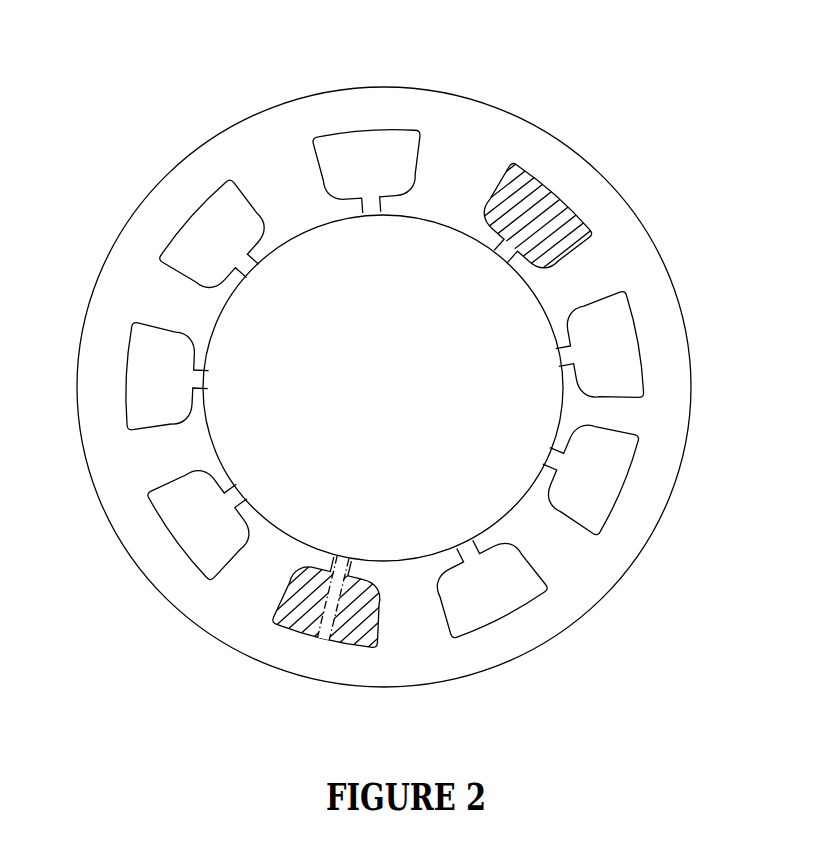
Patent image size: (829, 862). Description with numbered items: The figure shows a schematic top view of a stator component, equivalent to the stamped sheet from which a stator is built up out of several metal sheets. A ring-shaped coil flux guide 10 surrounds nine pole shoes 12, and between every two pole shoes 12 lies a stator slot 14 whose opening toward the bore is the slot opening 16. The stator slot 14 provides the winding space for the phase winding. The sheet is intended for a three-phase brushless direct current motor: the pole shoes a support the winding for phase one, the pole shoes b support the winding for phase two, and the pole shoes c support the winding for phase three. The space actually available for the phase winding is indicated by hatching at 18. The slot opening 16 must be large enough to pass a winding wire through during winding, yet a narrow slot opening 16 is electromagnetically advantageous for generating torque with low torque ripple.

The coil flux guide 10 is at (668, 502).
The pole shoe 12 is at (371, 352).
The stator slot 14 is at (535, 209).
The slot opening 16 is at (565, 356).
The space available for the phase winding 18 is at (290, 614).
The pole shoes for phase 1 a is at (451, 130).
The pole shoes for phase 2 b is at (600, 268).
The pole shoes for phase 3 c is at (275, 168).